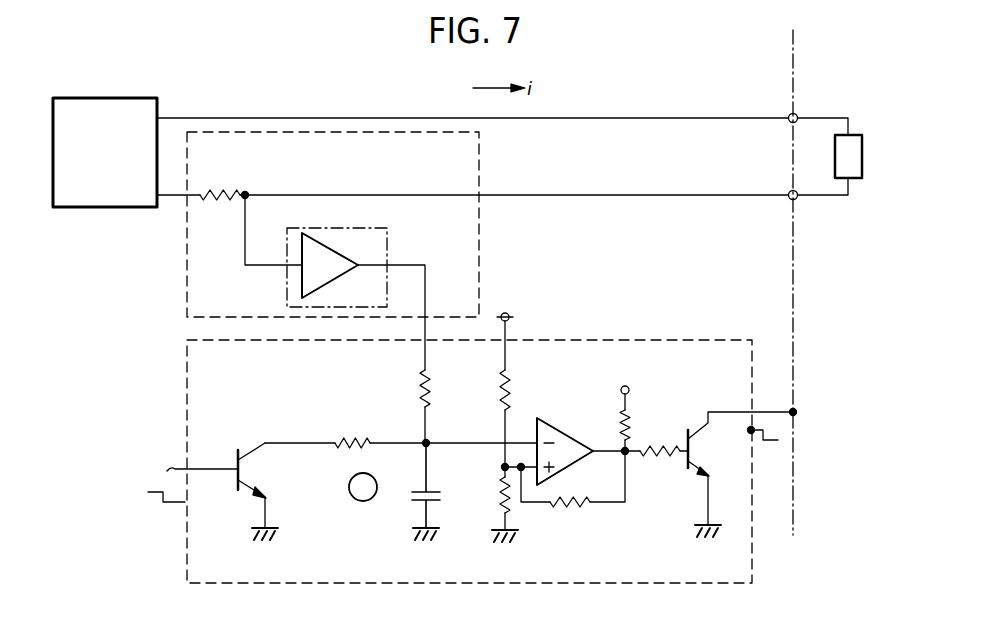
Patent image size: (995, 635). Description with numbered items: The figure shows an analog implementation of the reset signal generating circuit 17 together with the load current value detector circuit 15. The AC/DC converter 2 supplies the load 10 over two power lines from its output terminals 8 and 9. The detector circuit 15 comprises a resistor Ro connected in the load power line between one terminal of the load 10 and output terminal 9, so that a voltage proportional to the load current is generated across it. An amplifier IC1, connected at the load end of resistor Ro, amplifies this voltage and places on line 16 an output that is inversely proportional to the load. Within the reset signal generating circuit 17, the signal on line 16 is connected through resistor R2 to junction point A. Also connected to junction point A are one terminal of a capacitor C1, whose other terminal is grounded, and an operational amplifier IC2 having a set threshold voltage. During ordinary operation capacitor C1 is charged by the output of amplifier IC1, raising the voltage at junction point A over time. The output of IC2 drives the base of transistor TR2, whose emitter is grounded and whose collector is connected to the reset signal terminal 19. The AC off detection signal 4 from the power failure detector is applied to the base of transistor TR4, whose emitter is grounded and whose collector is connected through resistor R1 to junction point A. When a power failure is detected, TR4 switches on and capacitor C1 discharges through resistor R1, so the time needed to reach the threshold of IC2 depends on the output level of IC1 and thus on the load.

The AC/DC converter 2 is at (110, 98).
The power failure detector signal 4 is at (139, 482).
The output terminal 8 is at (157, 115).
The output terminal 9 is at (159, 207).
The load 10 is at (850, 135).
The load current value detector circuit 15 is at (356, 251).
The load current value signal 16 is at (427, 332).
The reset signal generating circuit 17 is at (658, 339).
The reset signal terminal 19 is at (797, 412).
The resistor R0 Ro is at (220, 214).
The amplifier IC1 is at (388, 236).
The operational amplifier IC2 is at (580, 416).
The resistor R1 is at (354, 440).
The resistor R2 is at (412, 386).
The capacitor C1 is at (442, 497).
The transistor TR2 is at (698, 418).
The transistor TR4 is at (249, 453).
The junction point A is at (424, 446).